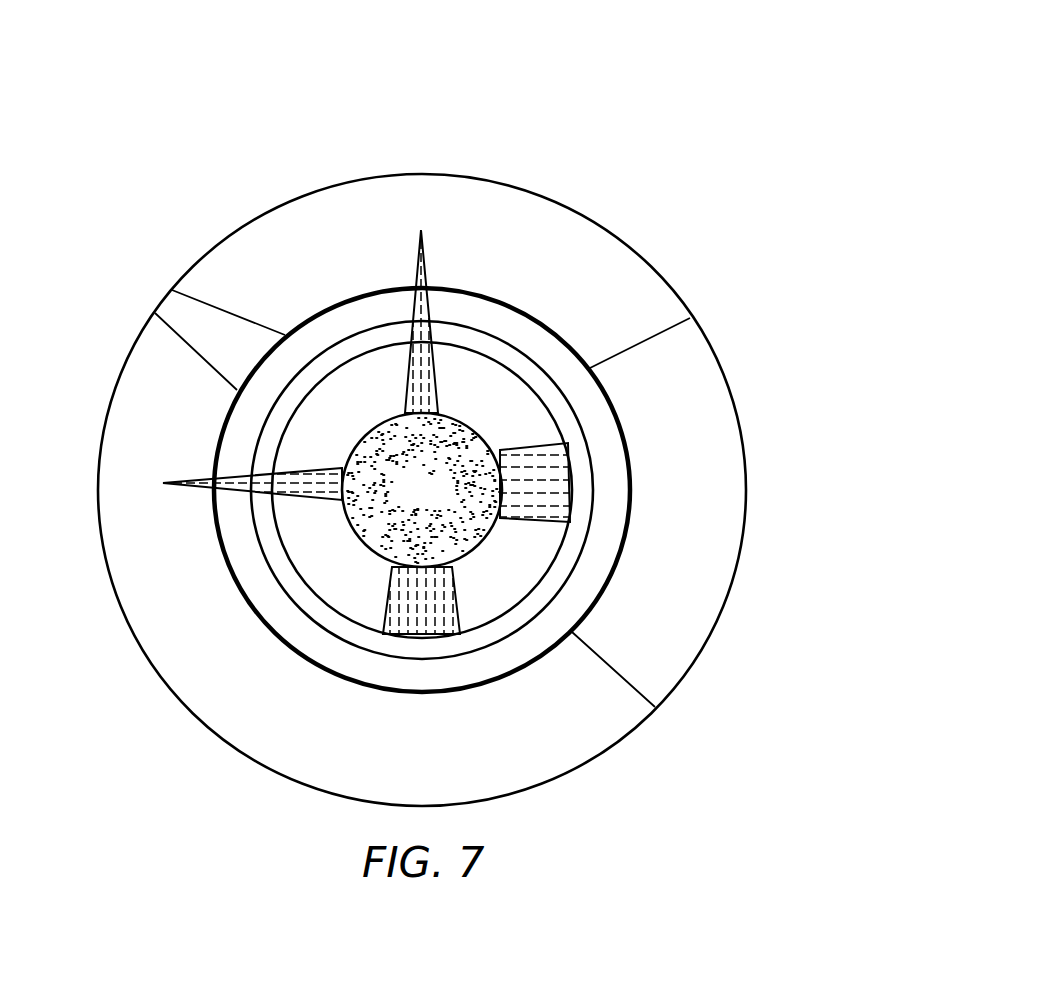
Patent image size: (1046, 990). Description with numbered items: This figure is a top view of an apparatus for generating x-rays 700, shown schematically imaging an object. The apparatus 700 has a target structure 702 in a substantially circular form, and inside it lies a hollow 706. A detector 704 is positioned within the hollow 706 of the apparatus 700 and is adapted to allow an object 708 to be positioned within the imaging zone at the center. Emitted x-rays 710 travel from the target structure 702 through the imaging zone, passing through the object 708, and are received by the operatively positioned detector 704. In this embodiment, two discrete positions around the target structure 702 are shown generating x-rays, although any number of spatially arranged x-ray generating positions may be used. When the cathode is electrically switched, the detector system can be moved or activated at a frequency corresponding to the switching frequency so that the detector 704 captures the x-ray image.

The apparatus for generating x-rays 700 is at (577, 153).
The target structure 702 is at (123, 512).
The detector 704 is at (287, 597).
The hollow 706 is at (322, 328).
The object 708 is at (448, 503).
The emitted x-rays 710 is at (427, 381).